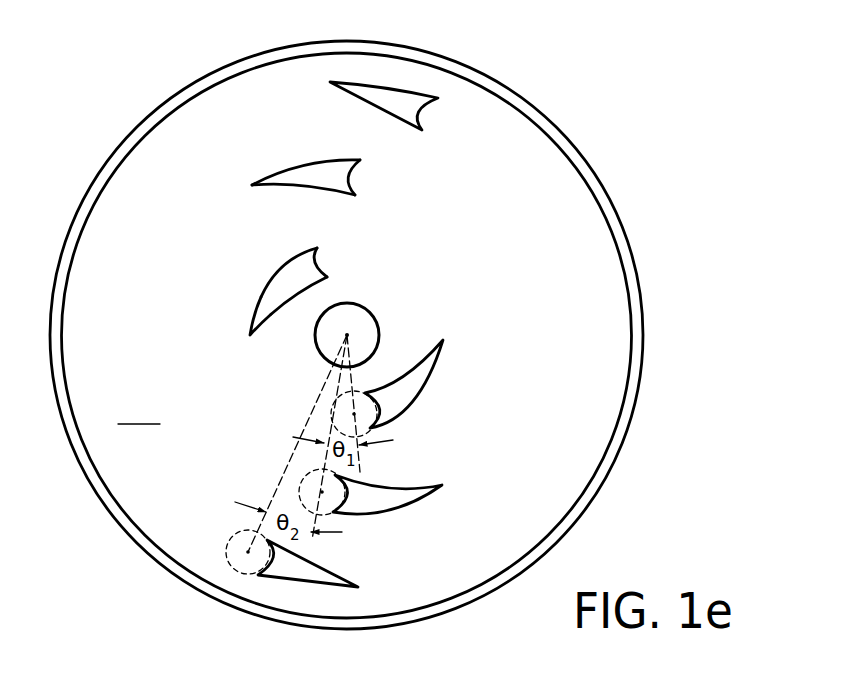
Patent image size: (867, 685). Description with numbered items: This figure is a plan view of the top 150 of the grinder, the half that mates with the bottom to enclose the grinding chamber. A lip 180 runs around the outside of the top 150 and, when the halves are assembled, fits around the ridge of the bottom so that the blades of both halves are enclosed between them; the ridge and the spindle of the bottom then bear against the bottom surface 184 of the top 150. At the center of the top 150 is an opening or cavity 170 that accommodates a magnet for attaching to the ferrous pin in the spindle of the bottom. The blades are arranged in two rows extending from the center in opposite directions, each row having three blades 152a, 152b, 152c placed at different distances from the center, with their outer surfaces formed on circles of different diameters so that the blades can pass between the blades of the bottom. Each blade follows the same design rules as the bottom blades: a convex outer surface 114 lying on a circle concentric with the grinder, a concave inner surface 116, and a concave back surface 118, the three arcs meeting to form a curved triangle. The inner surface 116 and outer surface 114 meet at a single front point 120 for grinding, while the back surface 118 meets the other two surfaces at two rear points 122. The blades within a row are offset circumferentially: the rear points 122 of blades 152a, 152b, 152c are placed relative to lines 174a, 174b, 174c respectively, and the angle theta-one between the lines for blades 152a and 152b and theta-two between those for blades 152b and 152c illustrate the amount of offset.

The top 150 is at (379, 335).
The lip 180 is at (643, 297).
The bottom surface 184 is at (139, 411).
The opening or cavity 170 is at (321, 345).
The blade 152a is at (337, 316).
The blade 152b is at (383, 497).
The blade 152c is at (412, 101).
The outer surface 114 is at (311, 164).
The inner surface 116 is at (282, 186).
The back surface 118 is at (350, 177).
The front point 120 is at (248, 336).
The rear points 122 is at (320, 247).
The line 174a is at (366, 387).
The line 174b is at (307, 476).
The line 174c is at (270, 498).